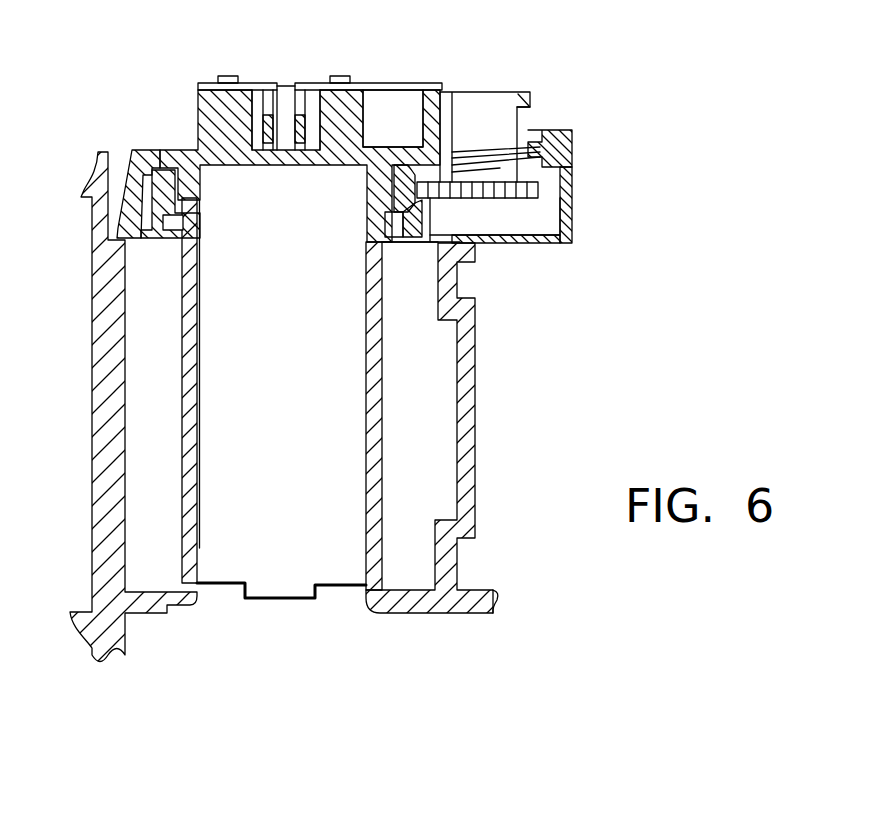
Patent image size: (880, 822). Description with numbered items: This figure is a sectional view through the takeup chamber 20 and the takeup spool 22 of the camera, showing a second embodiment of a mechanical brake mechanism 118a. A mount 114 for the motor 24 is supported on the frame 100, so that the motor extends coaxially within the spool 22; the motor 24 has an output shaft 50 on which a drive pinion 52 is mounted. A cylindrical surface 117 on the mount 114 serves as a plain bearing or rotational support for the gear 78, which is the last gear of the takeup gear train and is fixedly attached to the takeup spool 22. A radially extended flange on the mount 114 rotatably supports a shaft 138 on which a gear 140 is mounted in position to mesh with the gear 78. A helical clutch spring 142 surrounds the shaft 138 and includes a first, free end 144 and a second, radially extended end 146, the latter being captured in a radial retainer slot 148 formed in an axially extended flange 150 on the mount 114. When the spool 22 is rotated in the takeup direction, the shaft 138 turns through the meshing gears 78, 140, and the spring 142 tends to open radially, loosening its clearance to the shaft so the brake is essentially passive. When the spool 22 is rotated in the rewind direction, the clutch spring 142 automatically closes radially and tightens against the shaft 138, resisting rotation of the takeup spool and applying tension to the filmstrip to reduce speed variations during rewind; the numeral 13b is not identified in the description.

The frame 100 is at (95, 412).
The takeup spool 22 is at (192, 390).
The motor 24 is at (353, 573).
The takeup chamber 20 is at (447, 445).
The mount 114 is at (203, 110).
The cylindrical surface 117 is at (188, 178).
The output shaft 50 is at (282, 86).
The drive pinion 52 is at (307, 88).
The helical clutch spring 142 is at (480, 93).
The gear 78 is at (417, 243).
The shaft 138 is at (482, 93).
The terminal 13b is at (527, 97).
The radially extended end 146 is at (538, 137).
The radial retainer slot 148 is at (575, 138).
The free end 144 is at (538, 192).
The gear 140 is at (478, 197).
The axially extended flange 150 is at (572, 223).
The mechanical brake mechanism 118a is at (548, 232).